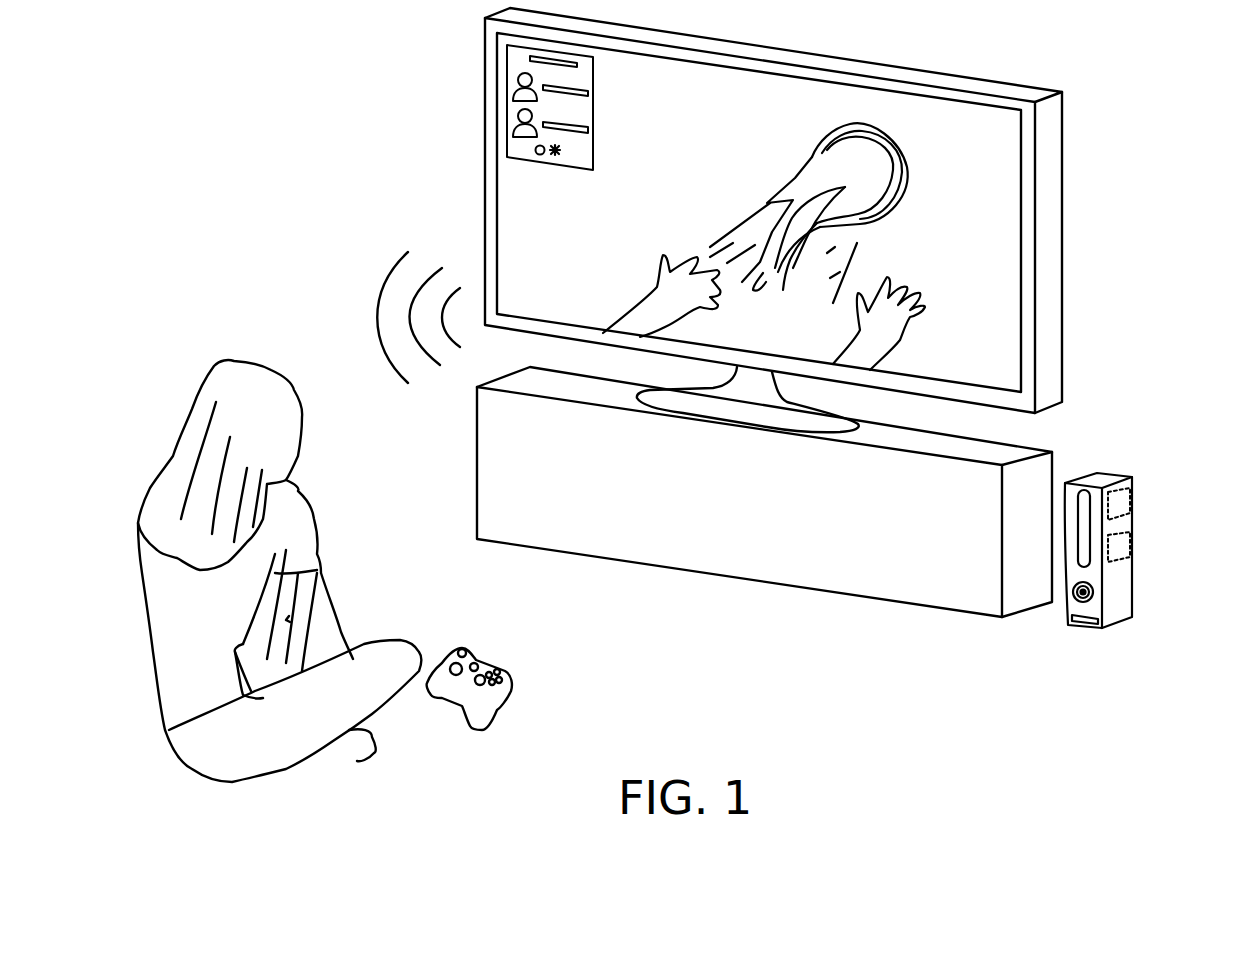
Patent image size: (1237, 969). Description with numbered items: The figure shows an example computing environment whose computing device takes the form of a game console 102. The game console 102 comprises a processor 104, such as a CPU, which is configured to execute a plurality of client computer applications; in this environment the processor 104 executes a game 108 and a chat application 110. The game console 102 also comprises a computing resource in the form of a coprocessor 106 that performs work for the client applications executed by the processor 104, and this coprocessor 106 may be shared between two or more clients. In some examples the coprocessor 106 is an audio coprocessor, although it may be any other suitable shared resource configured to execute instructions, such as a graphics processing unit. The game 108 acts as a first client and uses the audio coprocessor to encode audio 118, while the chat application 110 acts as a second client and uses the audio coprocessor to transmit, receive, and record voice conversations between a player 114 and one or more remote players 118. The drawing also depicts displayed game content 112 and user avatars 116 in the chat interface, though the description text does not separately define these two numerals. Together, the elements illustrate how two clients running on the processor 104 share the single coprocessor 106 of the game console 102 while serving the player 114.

The game console 102 is at (1118, 475).
The processor 104 is at (1130, 502).
The coprocessor 106 is at (1130, 555).
The game 108 is at (983, 140).
The chat application 110 is at (507, 108).
The game content / displayed game object 112 is at (868, 125).
The player 114 is at (210, 364).
The user avatars / icons 116 is at (522, 72).
The audio 118 is at (375, 257).